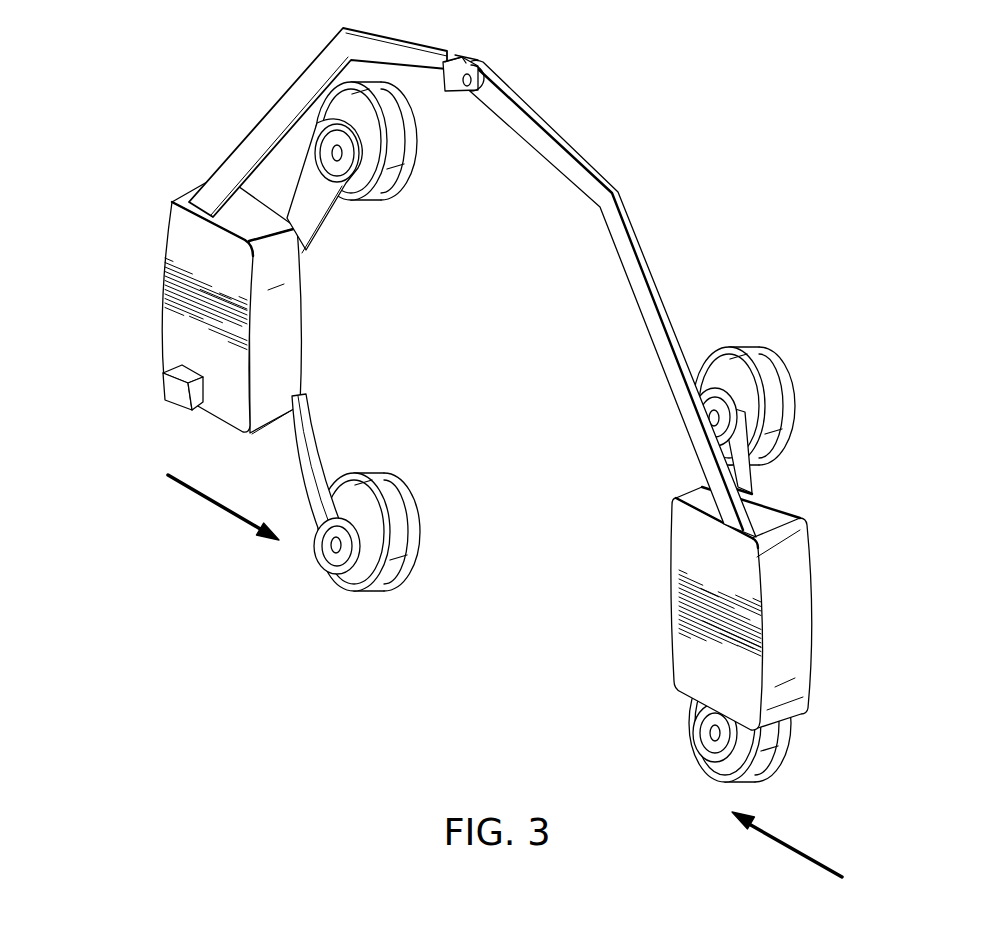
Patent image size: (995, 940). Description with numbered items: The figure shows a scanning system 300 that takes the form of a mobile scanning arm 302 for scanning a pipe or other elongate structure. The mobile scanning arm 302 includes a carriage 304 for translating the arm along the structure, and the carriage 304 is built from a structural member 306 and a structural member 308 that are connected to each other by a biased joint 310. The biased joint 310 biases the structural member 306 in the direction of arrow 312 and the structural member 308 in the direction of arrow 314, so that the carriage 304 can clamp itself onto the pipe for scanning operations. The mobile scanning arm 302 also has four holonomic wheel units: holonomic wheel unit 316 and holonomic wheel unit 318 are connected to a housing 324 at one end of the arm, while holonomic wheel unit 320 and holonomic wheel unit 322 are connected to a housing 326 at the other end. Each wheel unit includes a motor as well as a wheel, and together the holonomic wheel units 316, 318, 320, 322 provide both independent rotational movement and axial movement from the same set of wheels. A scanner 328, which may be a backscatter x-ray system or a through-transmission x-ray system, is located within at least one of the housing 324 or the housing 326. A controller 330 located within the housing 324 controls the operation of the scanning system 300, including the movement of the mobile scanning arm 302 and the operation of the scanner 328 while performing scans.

The scanning system 300 is at (672, 113).
The mobile scanning arm 302 is at (298, 76).
The carriage 304 is at (232, 172).
The structural member 306 is at (274, 125).
The structural member 308 is at (614, 240).
The biased joint 310 is at (465, 97).
The arrow 312 is at (207, 500).
The arrow 314 is at (803, 850).
The holonomic wheel unit 316 is at (388, 200).
The holonomic wheel unit 318 is at (389, 590).
The holonomic wheel unit 320 is at (733, 770).
The holonomic wheel unit 322 is at (727, 347).
The housing 324 is at (175, 232).
The housing 326 is at (805, 622).
The scanner 328 is at (131, 306).
The controller 330 is at (178, 397).